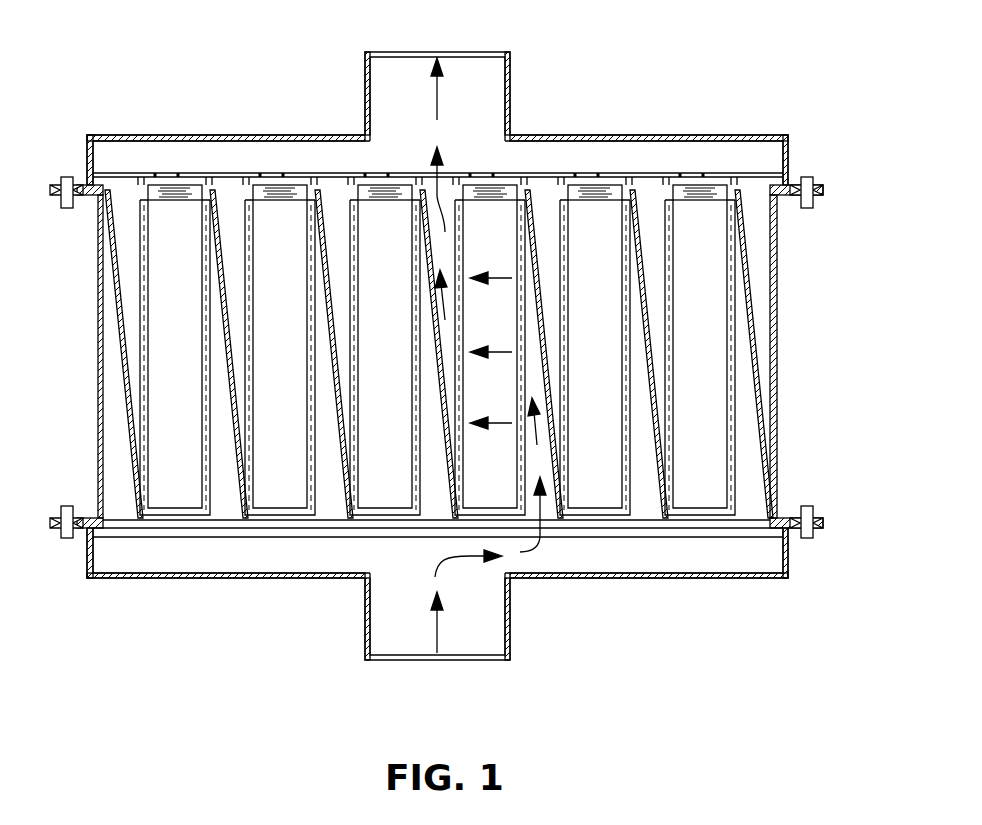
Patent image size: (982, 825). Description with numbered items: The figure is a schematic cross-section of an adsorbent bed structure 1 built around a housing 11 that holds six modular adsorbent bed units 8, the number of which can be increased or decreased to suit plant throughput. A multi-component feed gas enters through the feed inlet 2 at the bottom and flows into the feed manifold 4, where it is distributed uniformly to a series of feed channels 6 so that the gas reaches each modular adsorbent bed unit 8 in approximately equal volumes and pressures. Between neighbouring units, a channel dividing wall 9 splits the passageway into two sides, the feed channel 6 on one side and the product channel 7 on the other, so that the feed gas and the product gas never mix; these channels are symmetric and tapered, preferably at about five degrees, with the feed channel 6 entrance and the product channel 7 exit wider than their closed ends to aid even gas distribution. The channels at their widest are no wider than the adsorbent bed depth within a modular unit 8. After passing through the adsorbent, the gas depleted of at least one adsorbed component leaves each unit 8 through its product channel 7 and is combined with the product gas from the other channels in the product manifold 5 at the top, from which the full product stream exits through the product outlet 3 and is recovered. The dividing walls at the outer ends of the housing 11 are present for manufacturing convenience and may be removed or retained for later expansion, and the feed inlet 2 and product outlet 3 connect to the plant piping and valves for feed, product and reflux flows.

The adsorbent bed structure 1 is at (444, 331).
The feed inlet 2 is at (392, 648).
The product outlet 3 is at (394, 80).
The feed manifold 4 is at (595, 568).
The product manifold 5 is at (547, 166).
The feed channel 6 is at (759, 509).
The product channel 7 is at (661, 265).
The modular adsorbent bed unit 8 is at (713, 380).
The channel dividing wall 9 is at (652, 332).
The housing 11 is at (225, 133).